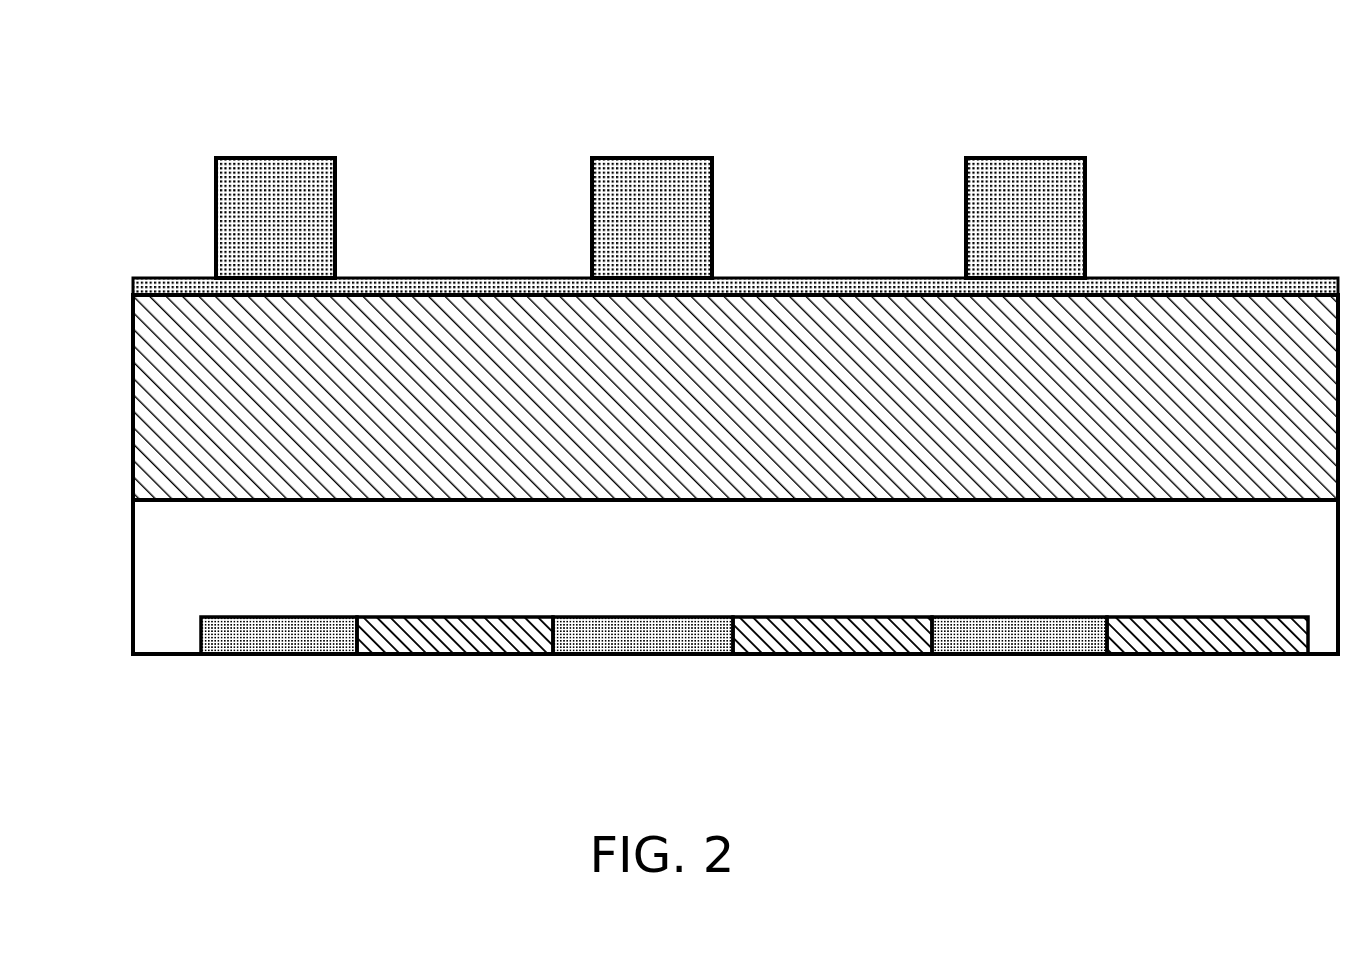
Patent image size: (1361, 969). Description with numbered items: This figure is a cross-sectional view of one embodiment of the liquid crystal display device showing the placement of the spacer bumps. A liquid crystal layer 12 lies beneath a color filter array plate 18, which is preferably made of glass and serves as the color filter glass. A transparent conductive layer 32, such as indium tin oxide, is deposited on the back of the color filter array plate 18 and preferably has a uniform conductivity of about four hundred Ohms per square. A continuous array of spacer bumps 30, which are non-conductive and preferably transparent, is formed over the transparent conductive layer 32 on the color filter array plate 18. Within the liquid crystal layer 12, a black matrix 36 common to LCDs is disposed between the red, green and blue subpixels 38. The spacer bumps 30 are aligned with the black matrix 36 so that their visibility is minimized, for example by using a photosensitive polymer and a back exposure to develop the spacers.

The liquid crystal layer 12 is at (132, 565).
The color filter array plate 18 is at (132, 398).
The spacer bumps 30 is at (278, 158).
The transparent conductive layer 32 is at (132, 285).
The black matrix 36 is at (285, 655).
The subpixels 38 is at (455, 655).